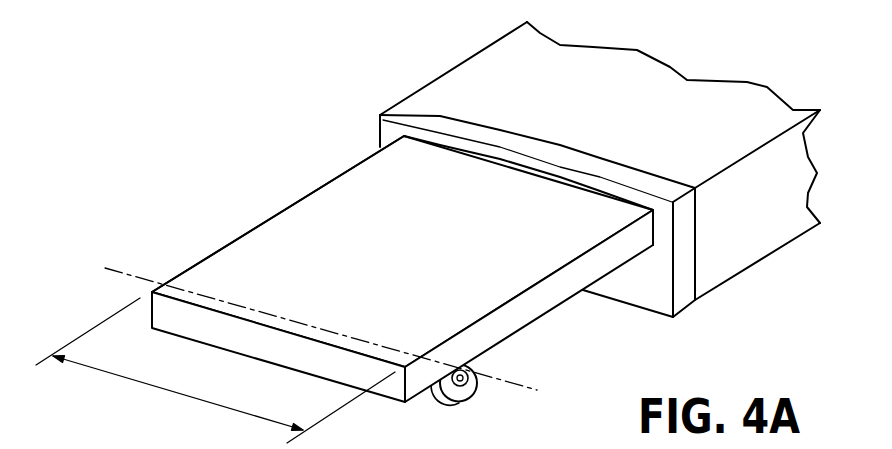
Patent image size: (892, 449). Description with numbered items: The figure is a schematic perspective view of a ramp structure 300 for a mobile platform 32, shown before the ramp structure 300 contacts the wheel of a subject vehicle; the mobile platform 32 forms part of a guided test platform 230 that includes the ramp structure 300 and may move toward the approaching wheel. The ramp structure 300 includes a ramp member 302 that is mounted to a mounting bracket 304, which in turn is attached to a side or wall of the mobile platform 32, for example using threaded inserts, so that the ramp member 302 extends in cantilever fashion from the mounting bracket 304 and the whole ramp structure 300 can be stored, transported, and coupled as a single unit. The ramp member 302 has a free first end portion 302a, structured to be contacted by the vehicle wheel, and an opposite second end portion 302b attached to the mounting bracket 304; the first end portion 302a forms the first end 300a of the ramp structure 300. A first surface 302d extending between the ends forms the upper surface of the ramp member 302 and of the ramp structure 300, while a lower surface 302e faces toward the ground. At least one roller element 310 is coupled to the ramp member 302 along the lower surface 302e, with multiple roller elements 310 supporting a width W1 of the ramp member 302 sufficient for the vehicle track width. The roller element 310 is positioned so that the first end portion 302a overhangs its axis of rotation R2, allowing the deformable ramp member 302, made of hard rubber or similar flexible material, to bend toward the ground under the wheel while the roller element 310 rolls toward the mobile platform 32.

The mobile platform 32 is at (565, 153).
The guided test platform 230 is at (452, 65).
The ramp structure 300 is at (385, 235).
The first end of the ramp structure 300a is at (240, 337).
The ramp member 302 is at (406, 235).
The first end portion of the ramp member 302a is at (215, 278).
The second end portion of the ramp member 302b is at (460, 175).
The first surface of the ramp member 302d is at (274, 286).
The lower surface of the ramp member 302e is at (565, 300).
The mounting bracket 304 is at (402, 116).
The roller element 310 is at (468, 397).
The axis of rotation of the roller elements R2 is at (117, 268).
The width of the ramp member W1 is at (215, 370).